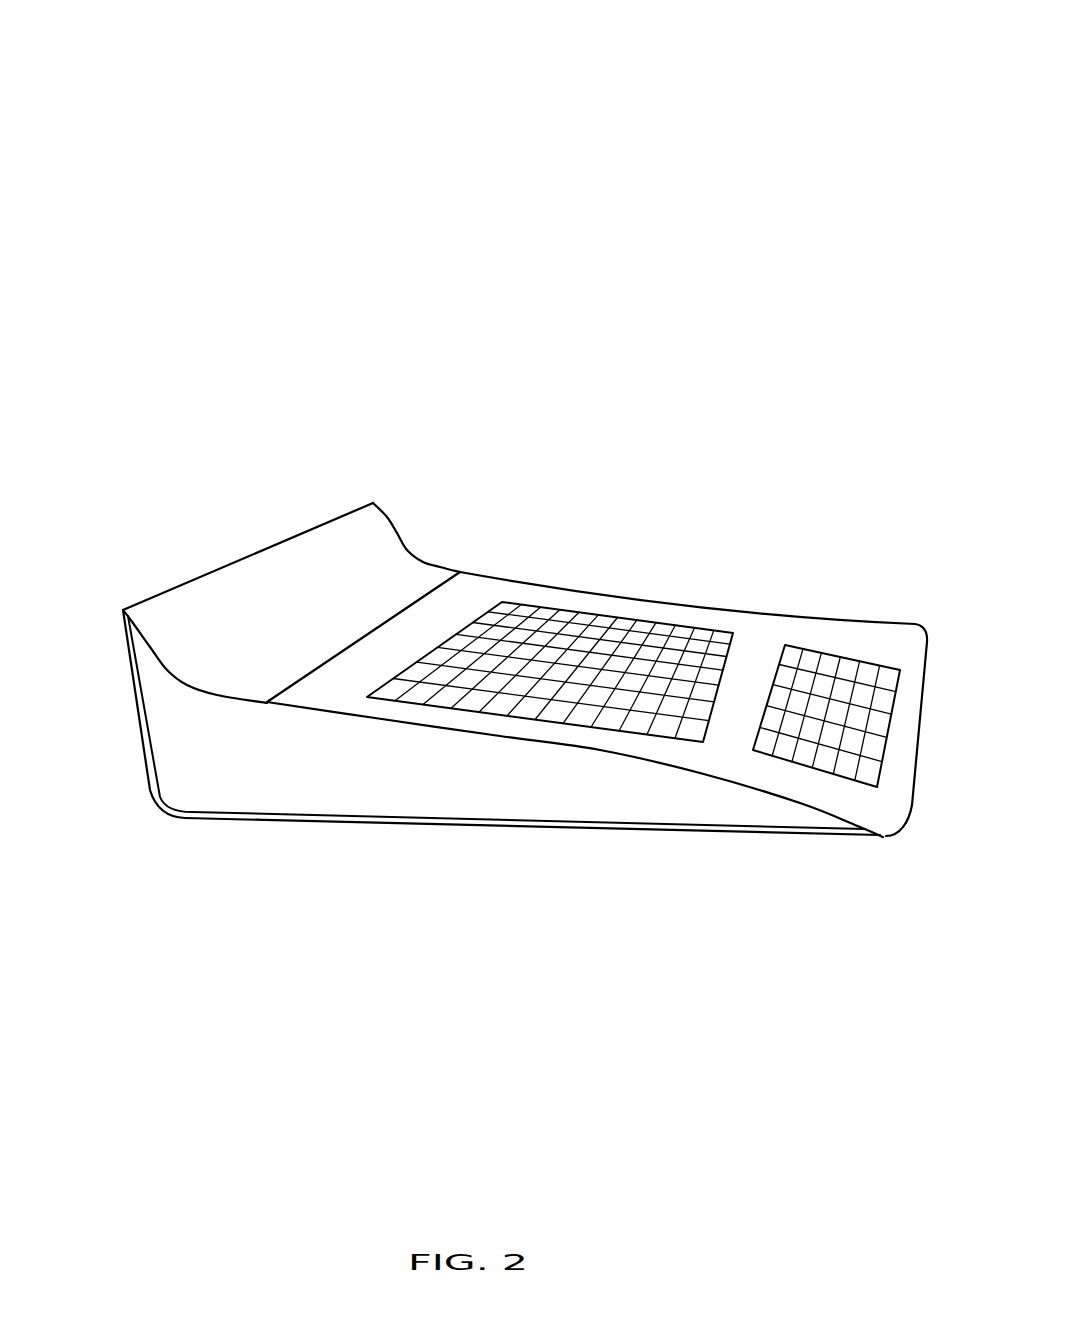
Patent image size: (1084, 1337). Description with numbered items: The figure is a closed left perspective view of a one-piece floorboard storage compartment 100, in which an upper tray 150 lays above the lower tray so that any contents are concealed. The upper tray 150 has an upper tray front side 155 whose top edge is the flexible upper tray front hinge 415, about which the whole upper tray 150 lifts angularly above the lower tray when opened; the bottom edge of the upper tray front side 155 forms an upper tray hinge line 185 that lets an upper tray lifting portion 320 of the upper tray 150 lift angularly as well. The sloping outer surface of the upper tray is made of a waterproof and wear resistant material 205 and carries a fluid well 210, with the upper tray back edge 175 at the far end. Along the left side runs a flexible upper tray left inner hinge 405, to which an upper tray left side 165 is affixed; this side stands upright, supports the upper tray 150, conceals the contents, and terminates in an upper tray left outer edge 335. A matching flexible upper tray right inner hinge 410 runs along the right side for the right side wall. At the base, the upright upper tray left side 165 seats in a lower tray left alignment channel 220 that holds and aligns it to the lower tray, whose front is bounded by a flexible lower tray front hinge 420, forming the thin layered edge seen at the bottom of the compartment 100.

The one-piece floorboard storage compartment 100 is at (130, 80).
The upper tray 150 is at (463, 584).
The upper tray front side 155 is at (357, 616).
The upper tray left side 165 is at (341, 783).
The upper tray back edge 175 is at (917, 750).
The upper tray hinge line 185 is at (322, 662).
The waterproof and wear resistant material 205 is at (566, 672).
The fluid well 210 is at (808, 721).
The lower tray left alignment channel 220 is at (163, 798).
The upper tray lifting portion 320 is at (429, 621).
The upper tray left outer edge 335 is at (640, 830).
The flexible upper tray left inner hinge 405 is at (375, 718).
The flexible upper tray right inner hinge 410 is at (638, 596).
The flexible upper tray front hinge 415 is at (347, 513).
The flexible lower tray front hinge 420 is at (155, 793).